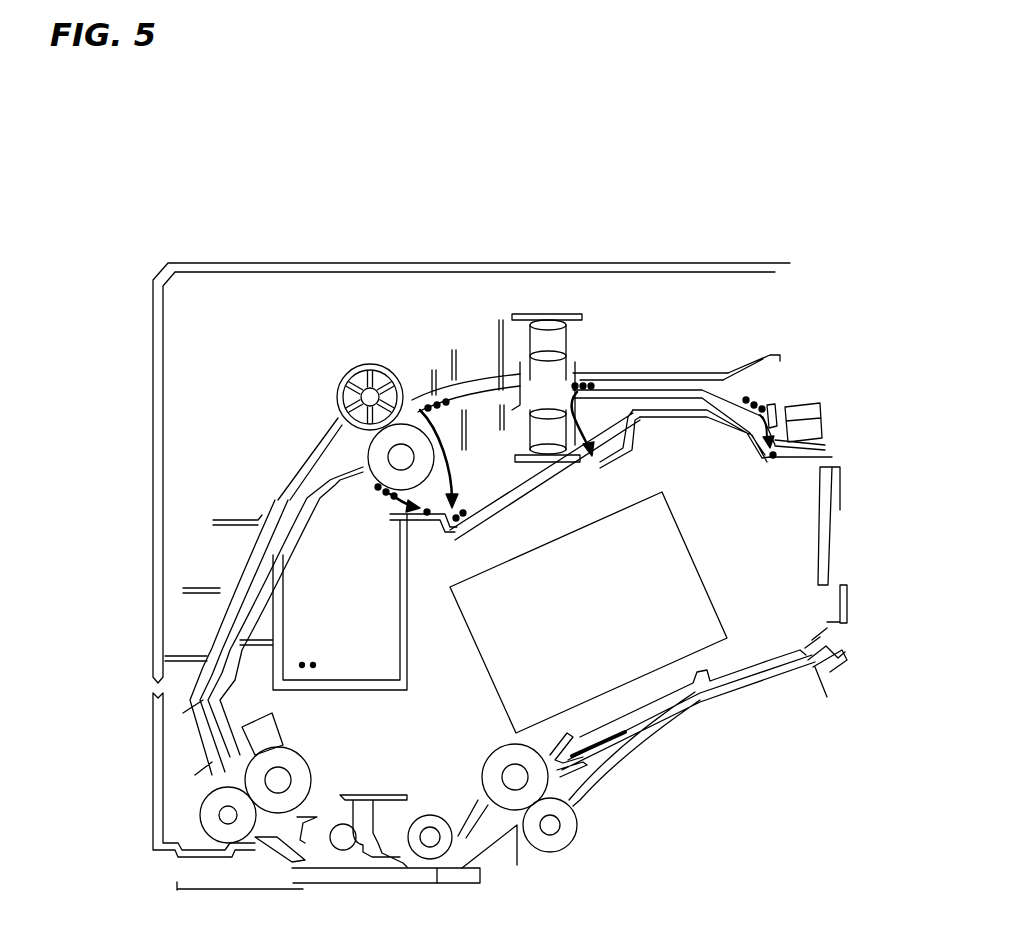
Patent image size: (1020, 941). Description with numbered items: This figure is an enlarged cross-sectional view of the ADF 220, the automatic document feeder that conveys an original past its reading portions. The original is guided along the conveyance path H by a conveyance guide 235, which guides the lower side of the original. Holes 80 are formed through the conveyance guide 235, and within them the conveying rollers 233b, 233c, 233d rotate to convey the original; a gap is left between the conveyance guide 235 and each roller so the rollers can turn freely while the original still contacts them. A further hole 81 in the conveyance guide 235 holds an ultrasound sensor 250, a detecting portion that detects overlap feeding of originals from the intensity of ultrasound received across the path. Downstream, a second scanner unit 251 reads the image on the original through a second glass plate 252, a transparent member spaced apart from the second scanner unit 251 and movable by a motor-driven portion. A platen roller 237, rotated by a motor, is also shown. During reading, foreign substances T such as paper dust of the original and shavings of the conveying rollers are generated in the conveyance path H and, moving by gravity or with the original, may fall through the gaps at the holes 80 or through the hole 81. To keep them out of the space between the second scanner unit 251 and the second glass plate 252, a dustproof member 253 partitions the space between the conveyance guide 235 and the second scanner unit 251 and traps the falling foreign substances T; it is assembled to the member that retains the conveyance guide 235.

The ADF 220 is at (654, 254).
The conveying roller 233b is at (347, 368).
The dustproof member 253 is at (505, 515).
The hole 81 is at (548, 396).
The ultrasound sensor 250 is at (567, 345).
The second scanner unit 251 is at (672, 513).
The foreign substances T is at (750, 406).
The holes 80 is at (373, 482).
The conveyance guide 235 is at (348, 450).
The conveyance path H is at (238, 582).
The platen roller 237 is at (433, 812).
The conveying roller 233c is at (200, 806).
The second glass plate 252 is at (665, 702).
The conveying roller 233d is at (567, 853).